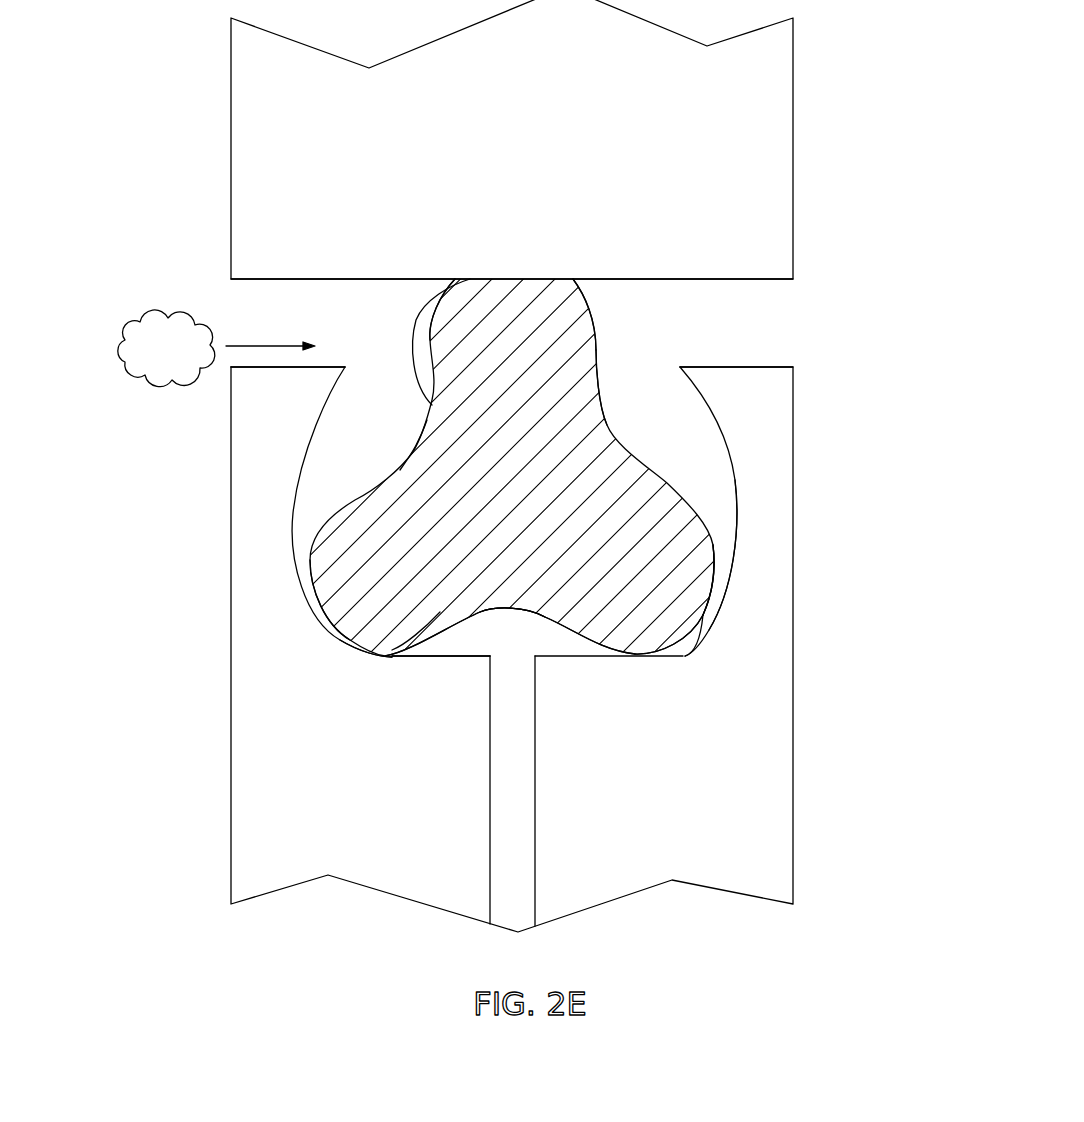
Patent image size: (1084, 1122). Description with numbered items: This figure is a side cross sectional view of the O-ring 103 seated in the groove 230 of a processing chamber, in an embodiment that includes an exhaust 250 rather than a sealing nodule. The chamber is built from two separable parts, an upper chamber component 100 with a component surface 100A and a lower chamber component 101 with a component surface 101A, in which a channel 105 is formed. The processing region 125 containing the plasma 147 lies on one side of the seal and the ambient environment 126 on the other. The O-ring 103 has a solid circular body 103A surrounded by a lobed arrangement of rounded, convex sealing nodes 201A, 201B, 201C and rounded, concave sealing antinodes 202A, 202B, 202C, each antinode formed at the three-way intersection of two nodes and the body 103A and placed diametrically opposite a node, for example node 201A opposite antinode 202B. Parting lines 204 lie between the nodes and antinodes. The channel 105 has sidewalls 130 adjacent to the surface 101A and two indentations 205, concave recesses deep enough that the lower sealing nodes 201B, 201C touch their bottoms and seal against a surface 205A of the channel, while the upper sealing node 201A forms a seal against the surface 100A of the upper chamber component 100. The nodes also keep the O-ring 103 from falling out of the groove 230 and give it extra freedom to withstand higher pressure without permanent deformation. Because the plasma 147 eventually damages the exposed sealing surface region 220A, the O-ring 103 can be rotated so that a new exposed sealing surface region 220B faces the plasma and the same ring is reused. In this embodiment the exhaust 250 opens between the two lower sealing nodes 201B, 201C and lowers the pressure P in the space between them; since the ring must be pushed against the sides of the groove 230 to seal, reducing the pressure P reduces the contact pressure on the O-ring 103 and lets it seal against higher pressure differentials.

The upper chamber component 100 is at (416, 129).
The component surface of the upper chamber component 100A is at (304, 278).
The lower chamber component 101 is at (589, 796).
The component surface of the lower chamber component 101A is at (253, 369).
The O-ring 103 is at (492, 438).
The solid circular body 103A is at (513, 497).
The channel 105 is at (735, 513).
The processing region 125 is at (72, 411).
The ambient environment 126 is at (888, 389).
The sidewalls 130 is at (292, 512).
The plasma 147 is at (147, 357).
The sealing node 201A is at (514, 270).
The sealing node 201B is at (408, 657).
The sealing node 201C is at (708, 613).
The sealing antinode 202A is at (404, 447).
The sealing antinode 202B is at (540, 621).
The sealing antinode 202C is at (618, 422).
The parting line 204 is at (598, 295).
The indentation 205 is at (742, 590).
The surface of the channel 205A is at (322, 628).
The exposed sealing surface region 220A is at (416, 327).
The new exposed sealing surface region 220B is at (497, 611).
The groove 230 is at (746, 565).
The exhaust 250 is at (537, 845).
The pressure P is at (491, 627).